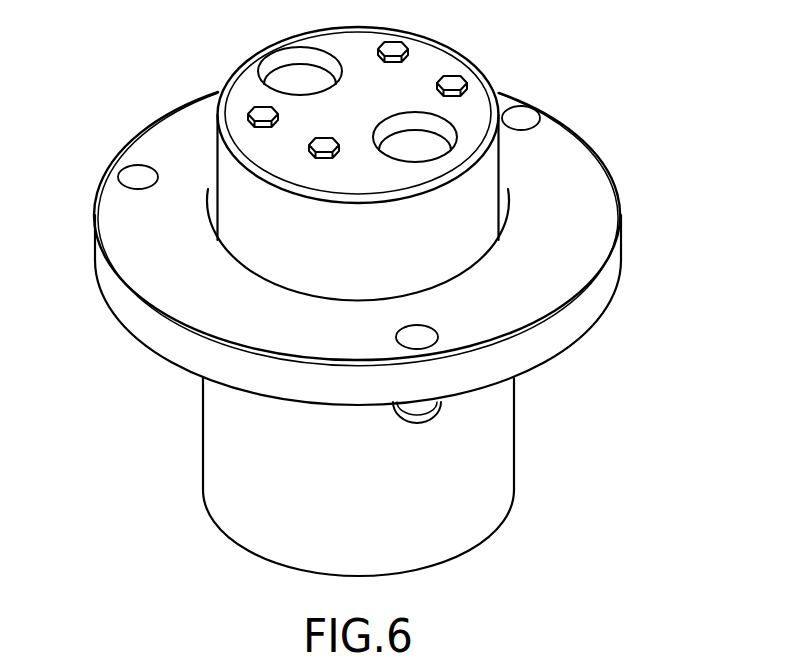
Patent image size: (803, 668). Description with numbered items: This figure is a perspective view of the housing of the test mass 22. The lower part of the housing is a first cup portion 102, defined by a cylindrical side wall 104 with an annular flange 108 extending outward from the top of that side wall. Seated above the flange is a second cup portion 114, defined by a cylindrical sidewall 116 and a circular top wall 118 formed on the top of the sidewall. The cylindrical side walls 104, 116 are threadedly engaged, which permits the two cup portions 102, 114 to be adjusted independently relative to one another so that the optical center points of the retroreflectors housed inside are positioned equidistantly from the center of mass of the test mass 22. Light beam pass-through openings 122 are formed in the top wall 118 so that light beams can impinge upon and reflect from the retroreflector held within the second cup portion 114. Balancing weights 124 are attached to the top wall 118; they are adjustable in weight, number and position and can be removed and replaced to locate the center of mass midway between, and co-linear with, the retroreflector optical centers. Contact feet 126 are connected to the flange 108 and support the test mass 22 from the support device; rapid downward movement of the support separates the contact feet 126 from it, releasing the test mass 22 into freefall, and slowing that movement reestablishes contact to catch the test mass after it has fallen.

The test mass 22 is at (168, 508).
The first cup portion 102 is at (540, 444).
The cylindrical side wall 104 is at (218, 433).
The annular flange 108 is at (600, 160).
The second cup portion 114 is at (522, 153).
The cylindrical sidewall 116 is at (220, 153).
The circular top wall 118 is at (442, 57).
The light beam pass-through opening 122 is at (306, 54).
The balancing weights 124 is at (393, 50).
The contact feet 126 is at (424, 421).